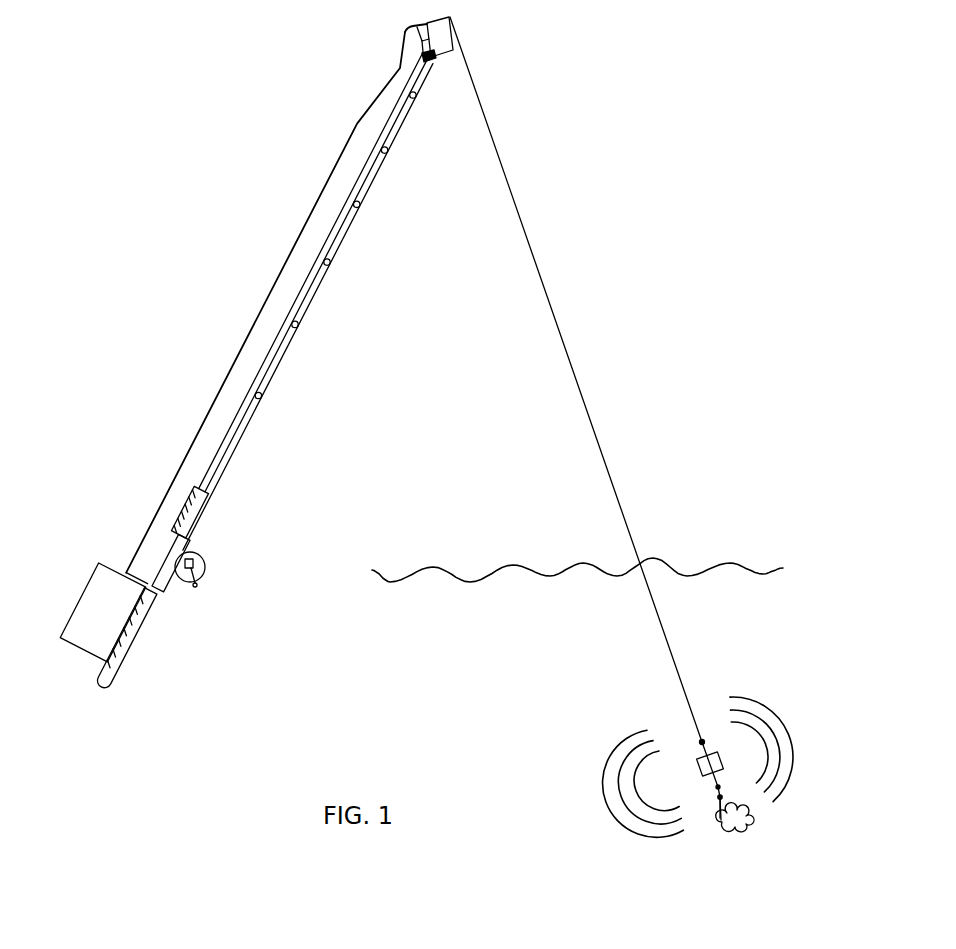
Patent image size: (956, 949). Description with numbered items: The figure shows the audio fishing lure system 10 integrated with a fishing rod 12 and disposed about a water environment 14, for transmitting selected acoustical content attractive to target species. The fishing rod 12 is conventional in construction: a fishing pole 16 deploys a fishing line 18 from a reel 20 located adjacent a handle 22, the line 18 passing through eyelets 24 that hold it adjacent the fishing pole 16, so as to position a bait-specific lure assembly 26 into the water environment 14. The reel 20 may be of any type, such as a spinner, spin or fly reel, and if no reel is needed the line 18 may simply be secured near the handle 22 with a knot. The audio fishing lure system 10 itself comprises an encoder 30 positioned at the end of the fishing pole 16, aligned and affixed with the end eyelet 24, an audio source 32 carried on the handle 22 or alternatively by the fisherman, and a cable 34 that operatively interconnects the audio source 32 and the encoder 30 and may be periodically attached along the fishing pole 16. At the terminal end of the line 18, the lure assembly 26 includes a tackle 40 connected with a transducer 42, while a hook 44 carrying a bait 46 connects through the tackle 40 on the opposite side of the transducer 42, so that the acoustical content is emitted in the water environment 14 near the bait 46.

The audio fishing lure system 10 is at (266, 211).
The fishing rod 12 is at (243, 433).
The water environment 14 is at (502, 671).
The fishing pole 16 is at (273, 363).
The fishing line 18 is at (537, 250).
The reel 20 is at (203, 566).
The handle 22 is at (117, 658).
The eyelets 24 is at (382, 147).
The lure assembly 26 is at (713, 713).
The encoder 30 is at (408, 70).
The audio source 32 is at (99, 569).
The cable 34 is at (144, 536).
The tackle 40 is at (705, 742).
The transducer 42 is at (697, 758).
The hook 44 is at (720, 818).
The bait 46 is at (748, 823).